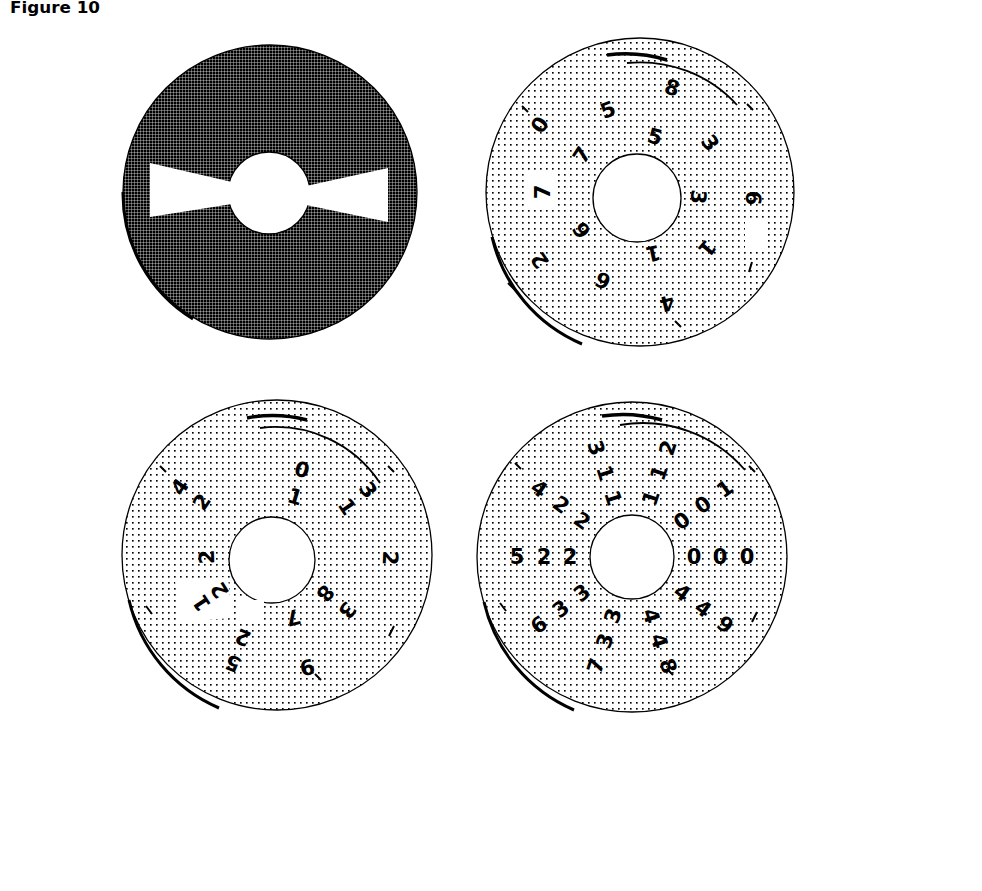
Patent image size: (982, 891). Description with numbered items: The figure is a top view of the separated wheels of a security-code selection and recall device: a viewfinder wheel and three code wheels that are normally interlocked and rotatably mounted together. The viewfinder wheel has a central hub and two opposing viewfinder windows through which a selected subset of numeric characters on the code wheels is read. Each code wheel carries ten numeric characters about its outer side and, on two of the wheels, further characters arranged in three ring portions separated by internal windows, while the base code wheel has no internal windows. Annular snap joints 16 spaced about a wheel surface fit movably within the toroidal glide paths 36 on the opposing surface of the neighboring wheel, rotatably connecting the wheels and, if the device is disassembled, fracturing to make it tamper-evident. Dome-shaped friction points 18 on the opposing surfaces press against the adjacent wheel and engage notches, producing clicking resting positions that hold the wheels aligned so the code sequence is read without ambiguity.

The snap joints 16 is at (748, 270).
The friction points 18 is at (750, 108).
The toroidal glide paths 36 is at (552, 268).